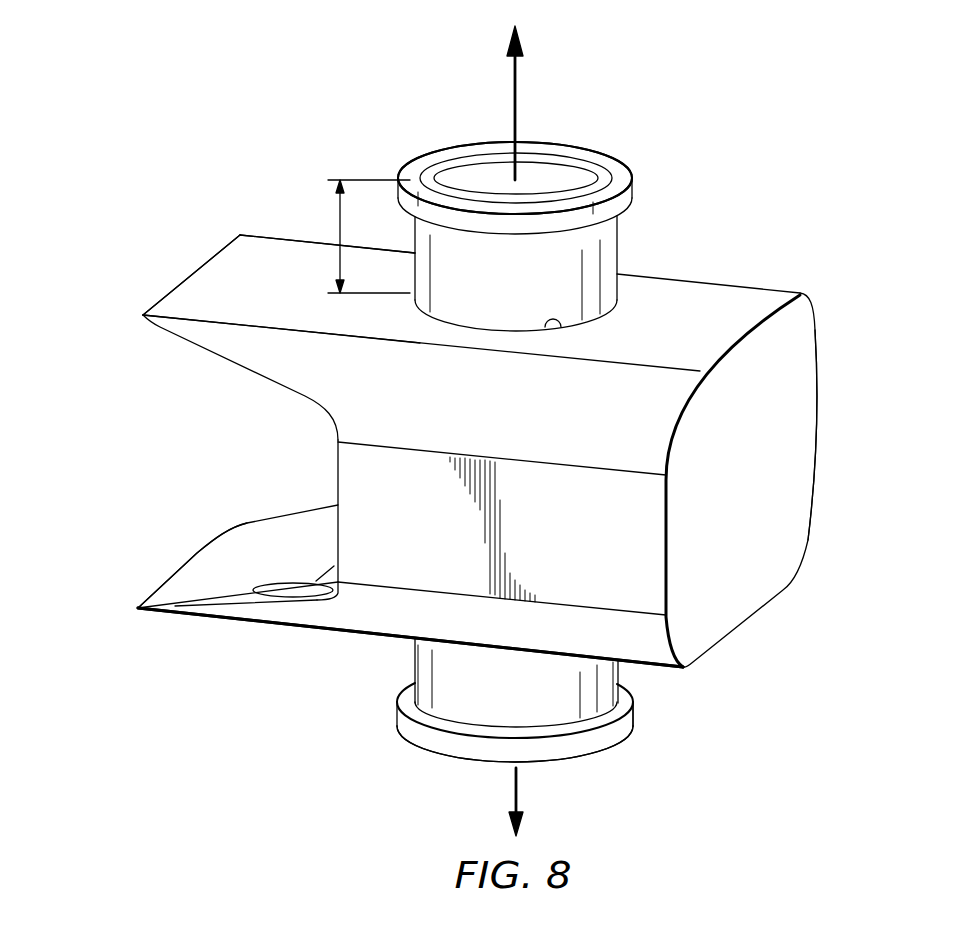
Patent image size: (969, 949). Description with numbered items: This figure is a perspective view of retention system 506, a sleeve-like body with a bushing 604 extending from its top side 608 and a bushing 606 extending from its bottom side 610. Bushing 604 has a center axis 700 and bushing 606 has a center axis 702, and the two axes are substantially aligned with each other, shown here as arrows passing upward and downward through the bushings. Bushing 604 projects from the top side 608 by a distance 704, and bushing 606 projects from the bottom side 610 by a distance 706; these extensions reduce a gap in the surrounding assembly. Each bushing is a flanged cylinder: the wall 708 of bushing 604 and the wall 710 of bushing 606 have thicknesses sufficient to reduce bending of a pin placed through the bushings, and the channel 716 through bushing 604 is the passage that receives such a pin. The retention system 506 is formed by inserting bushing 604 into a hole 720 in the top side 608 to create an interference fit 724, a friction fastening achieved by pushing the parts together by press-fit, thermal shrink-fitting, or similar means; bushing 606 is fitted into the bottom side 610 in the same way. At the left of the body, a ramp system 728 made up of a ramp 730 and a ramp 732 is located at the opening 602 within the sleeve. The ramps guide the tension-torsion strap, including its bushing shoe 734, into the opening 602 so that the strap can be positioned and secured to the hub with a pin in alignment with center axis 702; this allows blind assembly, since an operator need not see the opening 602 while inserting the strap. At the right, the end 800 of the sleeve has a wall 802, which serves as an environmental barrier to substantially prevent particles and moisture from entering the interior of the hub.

The retention system 506 is at (765, 262).
The opening 602 is at (272, 485).
The bushing 604 is at (420, 143).
The bushing 606 is at (445, 768).
The top side 608 is at (268, 250).
The bottom side 610 is at (332, 632).
The center axis 700 is at (518, 75).
The center axis 702 is at (519, 795).
The distance 704 is at (335, 267).
The distance 706 is at (192, 272).
The wall 708 is at (633, 188).
The wall 710 is at (633, 715).
The channel 716 is at (560, 187).
The hole 720 is at (615, 303).
The interference fit 724 is at (561, 327).
The ramp system 728 is at (113, 601).
The ramp 730 is at (173, 337).
The ramp 732 is at (200, 568).
The bushing shoe 734 is at (337, 457).
The end 800 is at (820, 420).
The wall 802 is at (721, 494).